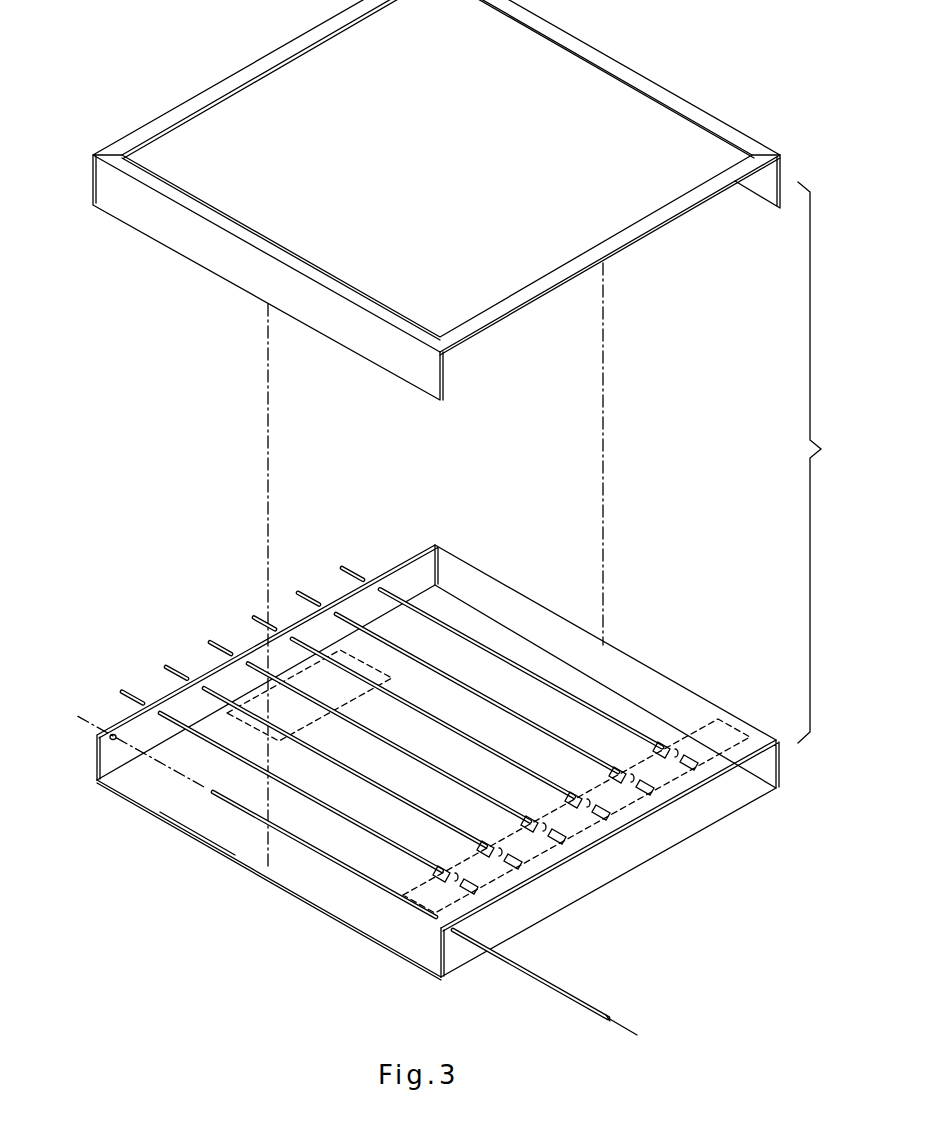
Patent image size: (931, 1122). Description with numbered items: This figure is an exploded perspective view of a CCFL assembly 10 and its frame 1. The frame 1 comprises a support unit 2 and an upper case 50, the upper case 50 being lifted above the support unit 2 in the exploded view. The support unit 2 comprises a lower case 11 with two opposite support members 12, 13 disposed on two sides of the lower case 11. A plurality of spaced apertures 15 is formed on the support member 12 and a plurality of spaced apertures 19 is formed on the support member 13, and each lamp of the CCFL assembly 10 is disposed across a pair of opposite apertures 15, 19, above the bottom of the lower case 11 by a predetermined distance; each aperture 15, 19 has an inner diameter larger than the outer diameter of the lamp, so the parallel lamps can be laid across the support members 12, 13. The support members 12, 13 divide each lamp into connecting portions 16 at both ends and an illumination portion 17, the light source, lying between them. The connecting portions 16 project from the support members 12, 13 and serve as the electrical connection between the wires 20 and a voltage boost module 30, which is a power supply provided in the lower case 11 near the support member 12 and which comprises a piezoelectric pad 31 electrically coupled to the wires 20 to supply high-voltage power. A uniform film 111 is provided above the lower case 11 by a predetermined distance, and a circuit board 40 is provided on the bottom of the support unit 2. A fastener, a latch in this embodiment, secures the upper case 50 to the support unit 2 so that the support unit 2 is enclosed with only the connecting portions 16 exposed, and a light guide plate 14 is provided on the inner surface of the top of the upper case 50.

The frame 1 is at (821, 462).
The support unit 2 is at (465, 960).
The CCFL assembly 10 is at (548, 970).
The lower case 11 is at (293, 893).
The uniform film 111 is at (193, 815).
The support member 12 is at (595, 880).
The support member 13 is at (393, 583).
The light guide plate 14 is at (465, 295).
The aperture 15 is at (750, 742).
The connecting portion 16 is at (601, 1008).
The illumination portion 17 is at (376, 887).
The aperture 19 is at (112, 735).
The wires 20 is at (627, 1027).
The voltage boost module 30 is at (663, 838).
The piezoelectric pad 31 is at (600, 866).
The circuit board 40 is at (243, 702).
The upper case 50 is at (213, 82).